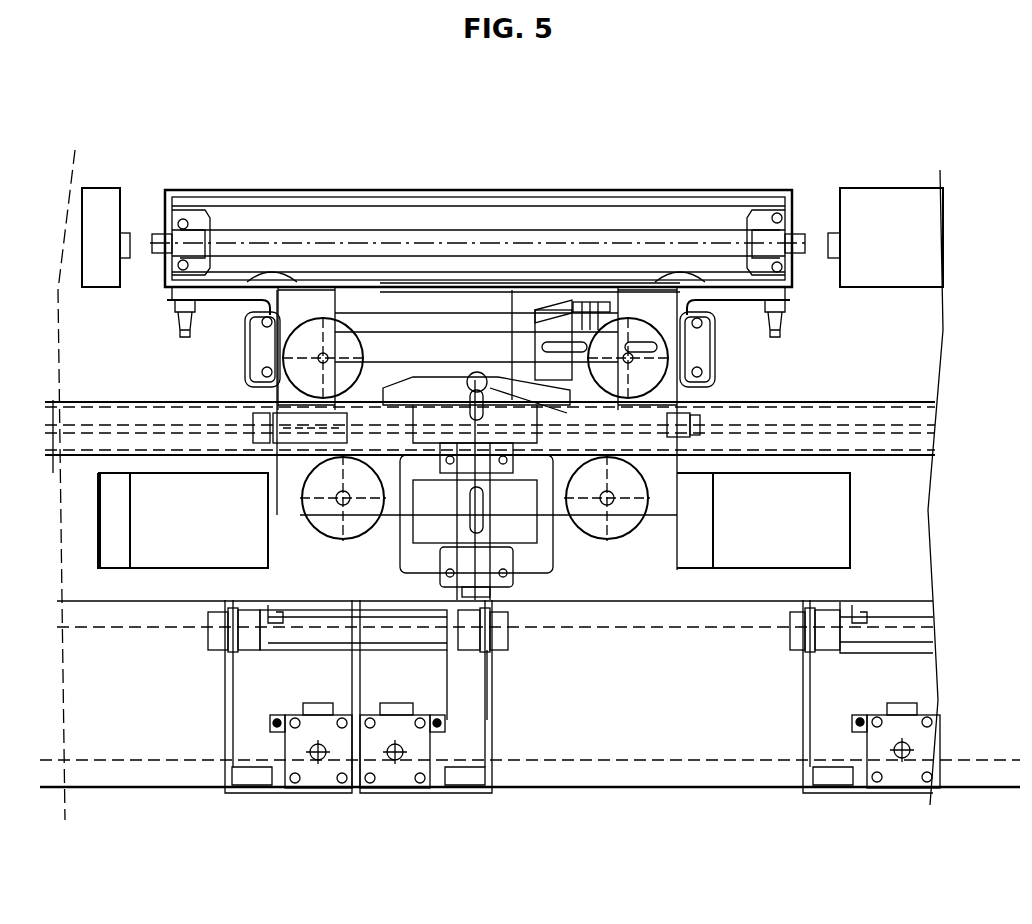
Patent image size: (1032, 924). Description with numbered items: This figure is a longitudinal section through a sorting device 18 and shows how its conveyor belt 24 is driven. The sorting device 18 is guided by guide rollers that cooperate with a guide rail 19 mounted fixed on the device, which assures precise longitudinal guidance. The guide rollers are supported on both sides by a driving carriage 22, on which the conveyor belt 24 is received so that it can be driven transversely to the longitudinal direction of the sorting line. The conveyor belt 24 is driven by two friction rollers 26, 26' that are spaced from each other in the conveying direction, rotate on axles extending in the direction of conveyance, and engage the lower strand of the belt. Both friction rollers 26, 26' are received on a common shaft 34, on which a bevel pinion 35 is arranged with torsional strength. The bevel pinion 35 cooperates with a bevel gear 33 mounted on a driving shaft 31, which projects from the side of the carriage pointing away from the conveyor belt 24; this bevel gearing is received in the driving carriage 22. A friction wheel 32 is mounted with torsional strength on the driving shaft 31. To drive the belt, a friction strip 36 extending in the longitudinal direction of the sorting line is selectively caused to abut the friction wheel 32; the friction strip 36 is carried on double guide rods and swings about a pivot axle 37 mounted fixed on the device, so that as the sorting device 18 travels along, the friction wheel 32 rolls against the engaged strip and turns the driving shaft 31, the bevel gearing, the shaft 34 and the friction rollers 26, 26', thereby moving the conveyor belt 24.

The sorting device 18 is at (103, 190).
The guide rail 19 is at (783, 440).
The driving carriage 22 is at (700, 395).
The conveyor belt 24 is at (318, 188).
The friction roller 26 is at (736, 335).
The friction roller 26' is at (231, 331).
The driving shaft 31 is at (462, 500).
The friction wheel 32 is at (538, 530).
The bevel gear 33 is at (510, 380).
The shaft 34 is at (416, 338).
The bevel pinion 35 is at (553, 305).
The friction strip 36 is at (164, 568).
The pivot axle 37 is at (413, 630).